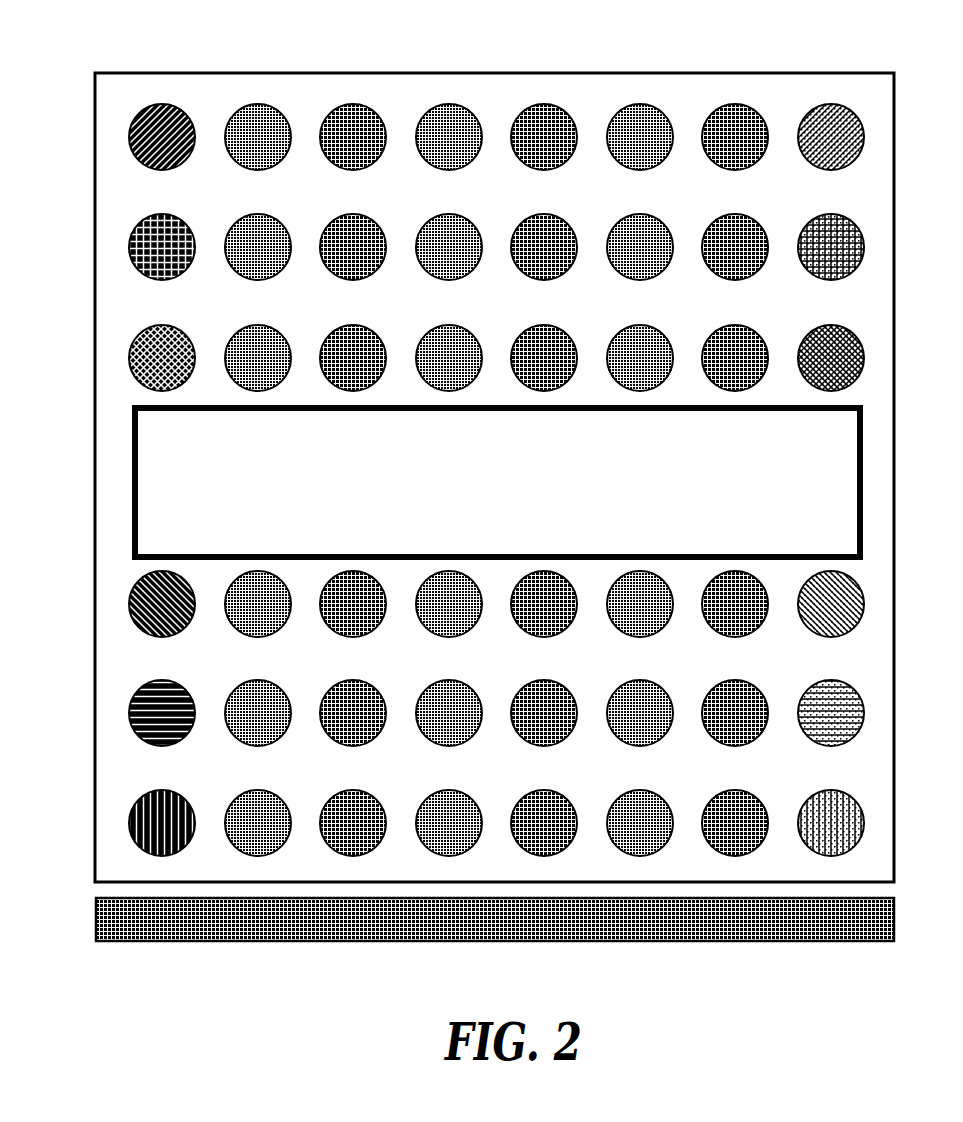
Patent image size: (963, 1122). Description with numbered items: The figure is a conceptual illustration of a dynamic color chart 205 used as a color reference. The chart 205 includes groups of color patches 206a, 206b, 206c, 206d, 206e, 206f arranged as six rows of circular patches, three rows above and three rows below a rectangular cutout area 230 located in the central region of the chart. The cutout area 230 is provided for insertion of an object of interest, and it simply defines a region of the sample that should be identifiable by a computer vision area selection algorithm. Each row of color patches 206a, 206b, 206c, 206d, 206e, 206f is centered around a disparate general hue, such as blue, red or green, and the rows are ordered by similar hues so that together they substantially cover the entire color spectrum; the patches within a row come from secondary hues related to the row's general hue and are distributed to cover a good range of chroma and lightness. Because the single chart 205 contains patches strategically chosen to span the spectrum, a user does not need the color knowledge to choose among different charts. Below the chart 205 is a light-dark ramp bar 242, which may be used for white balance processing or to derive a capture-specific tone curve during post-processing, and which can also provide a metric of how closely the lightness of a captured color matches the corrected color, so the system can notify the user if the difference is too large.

The dynamic color chart 205 is at (706, 73).
The group of color patches 206a is at (110, 135).
The group of color patches 206b is at (110, 245).
The group of color patches 206c is at (110, 356).
The group of color patches 206d is at (110, 602).
The group of color patches 206e is at (110, 711).
The group of color patches 206f is at (110, 821).
The cutout area 230 is at (350, 464).
The light-dark ramp bar 242 is at (790, 923).